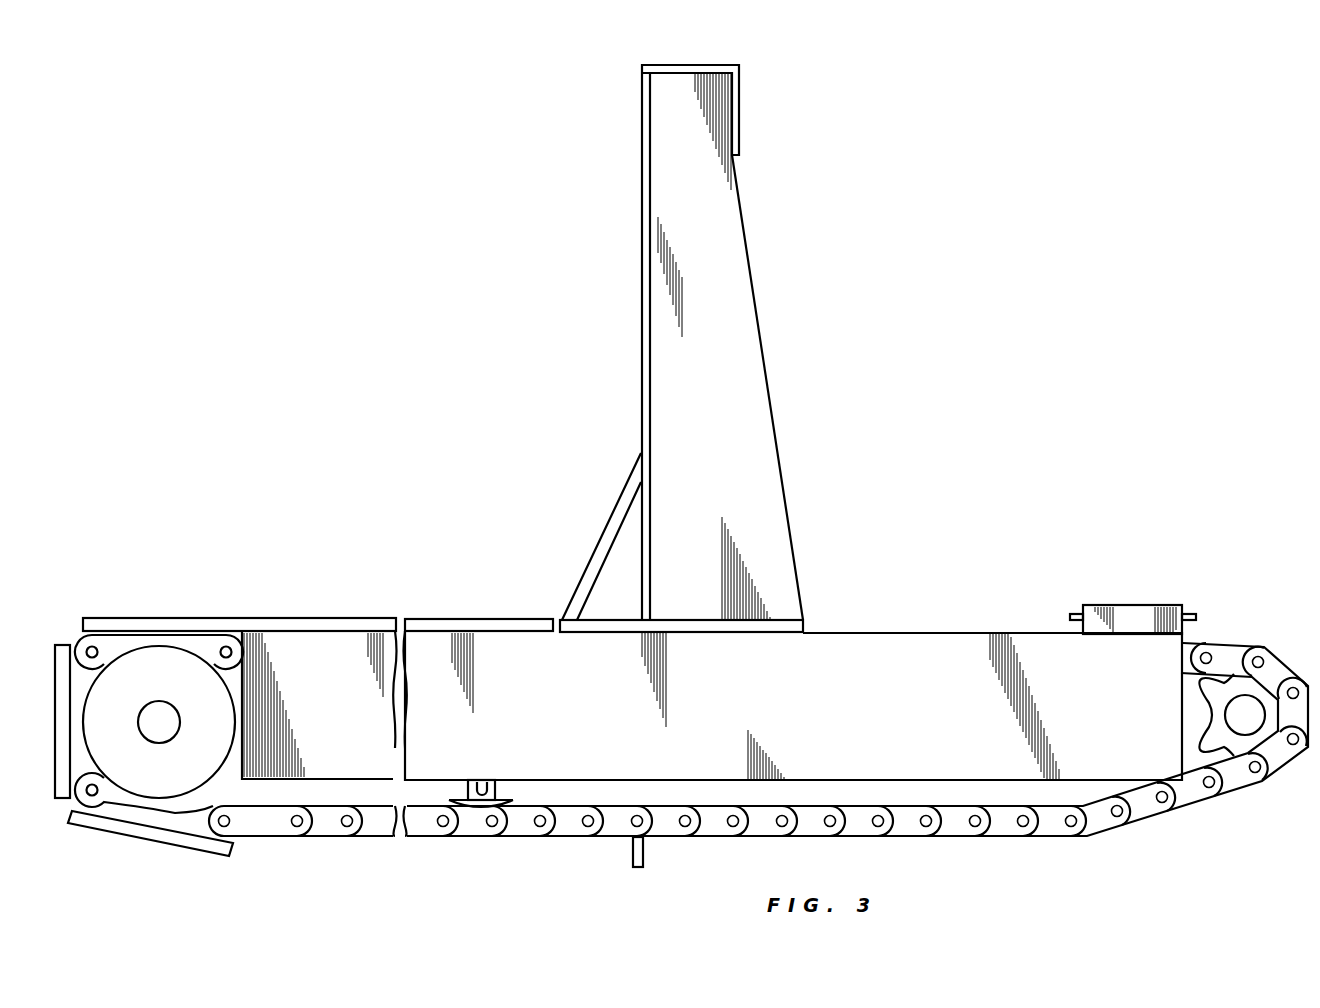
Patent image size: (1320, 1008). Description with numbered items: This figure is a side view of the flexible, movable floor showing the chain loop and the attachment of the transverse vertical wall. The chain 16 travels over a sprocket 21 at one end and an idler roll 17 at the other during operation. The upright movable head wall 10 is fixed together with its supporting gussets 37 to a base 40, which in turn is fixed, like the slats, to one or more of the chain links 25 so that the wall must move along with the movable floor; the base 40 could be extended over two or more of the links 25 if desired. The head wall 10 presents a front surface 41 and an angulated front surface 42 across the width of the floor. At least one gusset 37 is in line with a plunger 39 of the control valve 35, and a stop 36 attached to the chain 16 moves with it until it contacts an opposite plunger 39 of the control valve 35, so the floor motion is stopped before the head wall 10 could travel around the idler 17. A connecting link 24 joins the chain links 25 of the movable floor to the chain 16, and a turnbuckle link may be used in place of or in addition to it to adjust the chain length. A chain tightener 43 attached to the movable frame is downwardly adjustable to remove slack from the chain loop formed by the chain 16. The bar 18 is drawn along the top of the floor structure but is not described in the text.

The movable head wall 10 is at (711, 70).
The chain 16 is at (910, 838).
The idler roll 17 is at (147, 673).
The top bar 18 is at (181, 620).
The sprocket 21 is at (1253, 690).
The connecting link 24 is at (276, 838).
The chain links 25 is at (218, 640).
The control valve 35 is at (1140, 605).
The stop 36 is at (644, 862).
The supporting gussets 37 is at (752, 330).
The plunger 39 is at (1077, 615).
The base 40 is at (715, 634).
The front surface 41 is at (641, 215).
The angulated front surface 42 is at (612, 520).
The chain tightener 43 is at (490, 808).